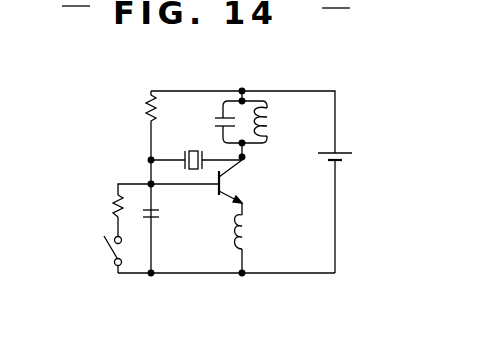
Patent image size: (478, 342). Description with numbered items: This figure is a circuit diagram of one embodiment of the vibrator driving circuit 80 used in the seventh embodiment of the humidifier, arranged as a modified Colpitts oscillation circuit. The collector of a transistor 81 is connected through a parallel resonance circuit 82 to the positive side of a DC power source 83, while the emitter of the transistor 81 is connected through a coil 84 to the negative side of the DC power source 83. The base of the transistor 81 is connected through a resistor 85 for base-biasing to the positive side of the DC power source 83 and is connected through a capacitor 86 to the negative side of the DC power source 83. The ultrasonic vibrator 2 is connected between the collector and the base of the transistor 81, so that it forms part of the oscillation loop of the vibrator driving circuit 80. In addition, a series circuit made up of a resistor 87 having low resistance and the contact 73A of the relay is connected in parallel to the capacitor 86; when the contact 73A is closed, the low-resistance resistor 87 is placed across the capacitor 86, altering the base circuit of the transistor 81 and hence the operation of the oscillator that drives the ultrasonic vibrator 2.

The vibrator driving circuit 80 is at (272, 281).
The transistor 81 is at (238, 181).
The parallel resonance circuit 82 is at (237, 123).
The DC power source 83 is at (356, 157).
The coil 84 is at (248, 235).
The resistor 85 is at (148, 112).
The capacitor 86 is at (162, 218).
The resistor 87 is at (112, 212).
The contact 73A is at (108, 262).
The ultrasonic vibrator 2 is at (190, 150).